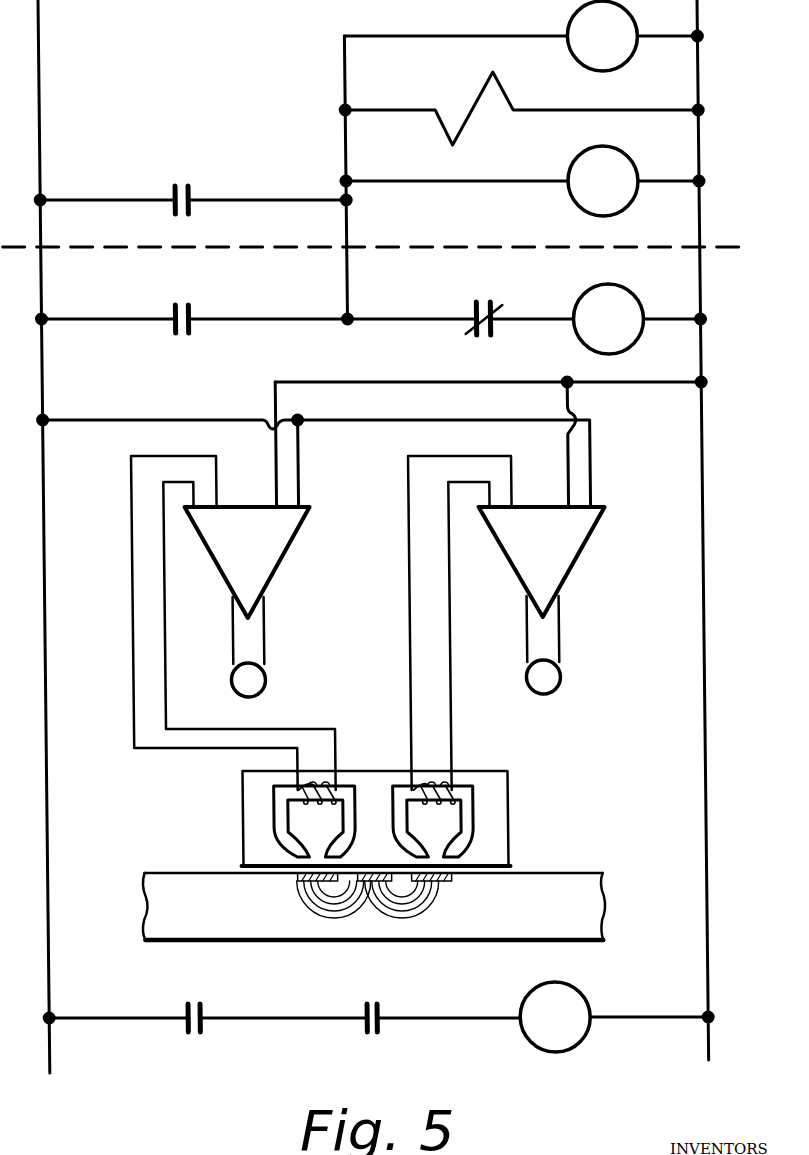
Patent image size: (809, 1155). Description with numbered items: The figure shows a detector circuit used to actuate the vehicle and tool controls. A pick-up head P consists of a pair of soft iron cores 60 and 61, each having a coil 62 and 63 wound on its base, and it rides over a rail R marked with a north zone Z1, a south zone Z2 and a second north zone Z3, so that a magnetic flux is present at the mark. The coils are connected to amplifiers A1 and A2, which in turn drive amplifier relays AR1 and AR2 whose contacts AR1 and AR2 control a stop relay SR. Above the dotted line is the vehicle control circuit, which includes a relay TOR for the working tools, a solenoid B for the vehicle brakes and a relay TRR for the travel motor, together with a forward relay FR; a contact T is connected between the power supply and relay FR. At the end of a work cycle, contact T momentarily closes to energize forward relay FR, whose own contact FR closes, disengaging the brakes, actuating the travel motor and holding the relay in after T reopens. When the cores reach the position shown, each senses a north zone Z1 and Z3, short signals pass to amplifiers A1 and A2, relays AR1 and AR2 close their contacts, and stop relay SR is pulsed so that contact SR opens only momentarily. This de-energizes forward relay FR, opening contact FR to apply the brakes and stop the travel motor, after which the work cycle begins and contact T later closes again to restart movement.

The relay contact T is at (180, 184).
The solenoid B is at (484, 84).
The tool relay TOR is at (521, 36).
The travel motor relay TRR is at (523, 181).
The forward relay FR is at (178, 303).
The stop relay SR is at (482, 302).
The amplifier A1 is at (226, 562).
The amplifier A2 is at (521, 562).
The amplifier relay AR1 is at (252, 682).
The amplifier relay AR2 is at (548, 678).
The pick-up head P is at (381, 845).
The core 60 is at (275, 822).
The core 61 is at (458, 816).
The coil 62 is at (338, 772).
The coil 63 is at (458, 792).
The rail R is at (594, 903).
The north zone Z1 is at (287, 882).
The south zone Z2 is at (365, 882).
The second north zone Z3 is at (440, 882).